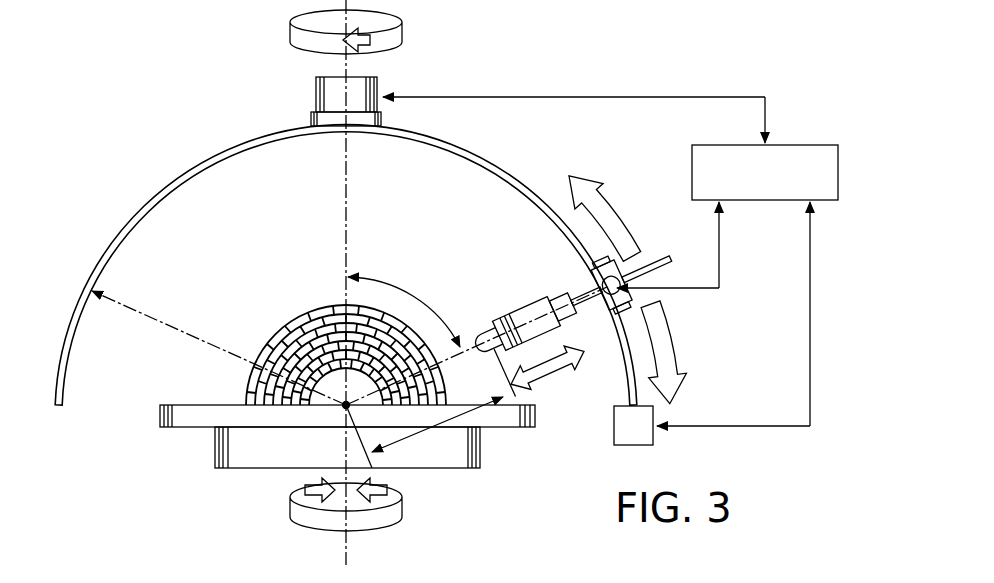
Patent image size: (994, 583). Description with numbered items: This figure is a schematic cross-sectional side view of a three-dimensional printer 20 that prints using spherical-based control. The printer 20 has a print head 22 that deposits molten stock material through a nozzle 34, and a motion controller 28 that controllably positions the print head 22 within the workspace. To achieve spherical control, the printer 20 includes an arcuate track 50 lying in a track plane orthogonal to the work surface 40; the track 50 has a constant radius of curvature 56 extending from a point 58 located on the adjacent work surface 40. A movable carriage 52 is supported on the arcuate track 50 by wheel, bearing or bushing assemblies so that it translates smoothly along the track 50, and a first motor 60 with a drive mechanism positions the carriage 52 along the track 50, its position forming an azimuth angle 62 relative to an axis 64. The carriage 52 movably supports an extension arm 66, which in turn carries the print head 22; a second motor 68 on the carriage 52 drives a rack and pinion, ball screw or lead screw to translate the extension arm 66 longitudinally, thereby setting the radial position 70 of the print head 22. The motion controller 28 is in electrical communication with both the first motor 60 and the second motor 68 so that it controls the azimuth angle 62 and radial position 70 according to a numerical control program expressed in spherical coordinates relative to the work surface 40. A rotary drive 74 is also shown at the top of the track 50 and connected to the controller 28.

The 3D printer 20 is at (148, 82).
The print head 22 is at (530, 302).
The motion controller 28 is at (797, 145).
The nozzle 34 is at (490, 318).
The work surface 40 is at (212, 404).
The arcuate track 50 is at (156, 186).
The movable carriage 52 is at (600, 268).
The radius of curvature 56 is at (146, 318).
The point 58 is at (343, 408).
The first motor 60 is at (633, 425).
The azimuth angle 62 is at (420, 300).
The axis 64 is at (347, 207).
The extension arm 66 is at (586, 298).
The second motor 68 is at (622, 282).
The radial position 70 is at (455, 428).
The rotation motor 74 is at (315, 95).